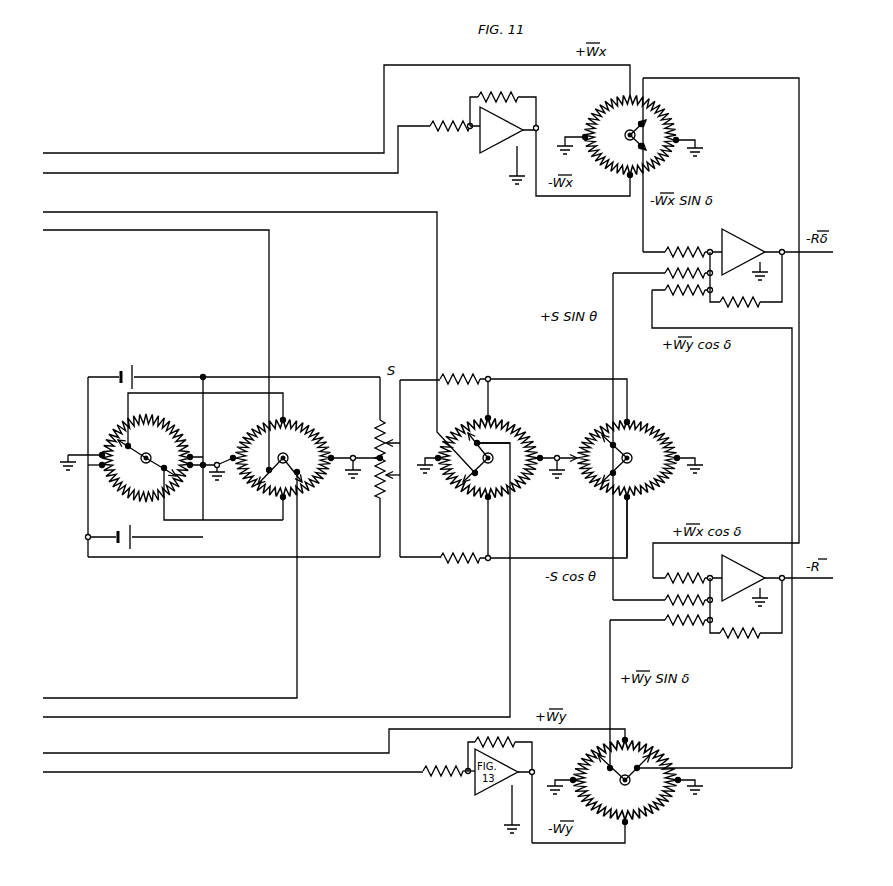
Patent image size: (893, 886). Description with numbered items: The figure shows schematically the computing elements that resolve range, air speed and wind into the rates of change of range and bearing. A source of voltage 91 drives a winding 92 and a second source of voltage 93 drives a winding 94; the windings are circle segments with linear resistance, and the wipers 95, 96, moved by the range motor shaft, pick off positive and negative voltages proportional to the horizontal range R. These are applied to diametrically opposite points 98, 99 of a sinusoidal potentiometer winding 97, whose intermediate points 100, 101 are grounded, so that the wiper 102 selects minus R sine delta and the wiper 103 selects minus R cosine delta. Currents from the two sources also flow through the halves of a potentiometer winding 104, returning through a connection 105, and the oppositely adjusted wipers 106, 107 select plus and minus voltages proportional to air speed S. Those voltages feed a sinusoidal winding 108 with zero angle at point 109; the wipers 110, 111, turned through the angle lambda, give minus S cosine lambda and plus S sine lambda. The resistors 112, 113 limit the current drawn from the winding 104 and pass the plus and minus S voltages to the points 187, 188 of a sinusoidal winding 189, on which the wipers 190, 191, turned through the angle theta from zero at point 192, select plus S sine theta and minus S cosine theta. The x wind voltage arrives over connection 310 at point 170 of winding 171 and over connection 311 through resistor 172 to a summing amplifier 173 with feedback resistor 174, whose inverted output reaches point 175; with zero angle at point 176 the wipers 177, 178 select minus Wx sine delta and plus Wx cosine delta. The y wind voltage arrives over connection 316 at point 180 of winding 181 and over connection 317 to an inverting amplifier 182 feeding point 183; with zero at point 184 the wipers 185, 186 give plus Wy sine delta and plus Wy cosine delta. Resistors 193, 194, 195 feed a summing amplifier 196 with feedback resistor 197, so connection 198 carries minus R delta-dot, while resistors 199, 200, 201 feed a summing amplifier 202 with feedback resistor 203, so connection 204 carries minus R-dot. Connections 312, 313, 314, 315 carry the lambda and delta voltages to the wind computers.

The source of voltage 91 is at (131, 367).
The winding 92 is at (168, 423).
The source of voltage 93 is at (126, 551).
The winding 94 is at (116, 496).
The wiper 95 is at (128, 453).
The wiper 96 is at (156, 471).
The potentiometer winding 97 is at (310, 433).
The point 98 is at (290, 419).
The point 99 is at (282, 503).
The point 100 is at (235, 455).
The point 101 is at (340, 457).
The wiper 102 is at (300, 467).
The wiper 103 is at (266, 469).
The potentiometer winding 104 is at (376, 495).
The connection 105 is at (376, 561).
The wiper 106 is at (400, 420).
The wiper 107 is at (400, 510).
The potentiometer winding 108 is at (518, 431).
The point 109 is at (446, 453).
The wiper 110 is at (488, 469).
The wiper 111 is at (473, 467).
The resistor 112 is at (453, 367).
The resistor 113 is at (449, 567).
The point 170 is at (630, 77).
The potentiometer winding 171 is at (678, 133).
The resistor 172 is at (450, 134).
The summing amplifier 173 is at (480, 150).
The feedback resistor 174 is at (508, 94).
The point 175 is at (616, 179).
The point 176 is at (574, 136).
The wiper 177 is at (634, 149).
The wiper 178 is at (636, 124).
The point 180 is at (630, 743).
The potentiometer winding 181 is at (672, 757).
The amplifier 182 is at (474, 791).
The point 183 is at (634, 827).
The point 184 is at (580, 773).
The wiper 185 is at (606, 779).
The wiper 186 is at (636, 781).
The point 187 is at (636, 423).
The point 188 is at (632, 503).
The potentiometer winding 189 is at (660, 441).
The wiper 190 is at (626, 443).
The wiper 191 is at (624, 469).
The point 192 is at (583, 451).
The resistor 193 is at (686, 249).
The resistor 194 is at (665, 267).
The resistor 195 is at (680, 297).
The summing amplifier 196 is at (738, 241).
The feedback resistor 197 is at (742, 309).
The connection 198 is at (808, 253).
The resistor 199 is at (688, 578).
The resistor 200 is at (665, 599).
The resistor 201 is at (665, 619).
The summing amplifier 202 is at (740, 569).
The feedback resistor 203 is at (738, 641).
The connection 204 is at (810, 579).
The connection 310 is at (84, 156).
The connection 311 is at (82, 175).
The connection 312 is at (72, 213).
The connection 313 is at (72, 232).
The connection 314 is at (64, 698).
The connection 315 is at (74, 721).
The connection 316 is at (74, 753).
The connection 317 is at (76, 778).